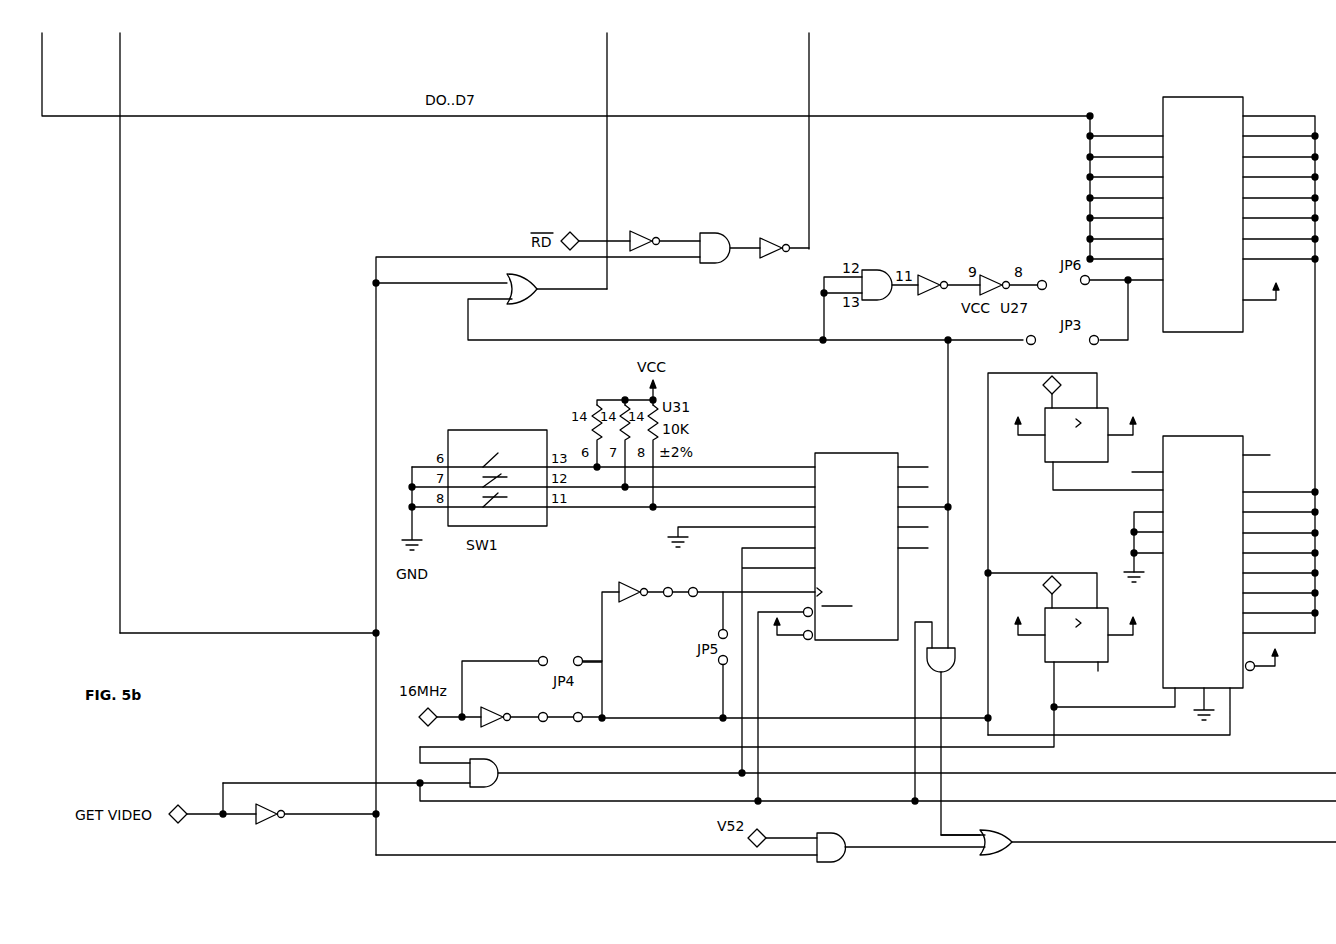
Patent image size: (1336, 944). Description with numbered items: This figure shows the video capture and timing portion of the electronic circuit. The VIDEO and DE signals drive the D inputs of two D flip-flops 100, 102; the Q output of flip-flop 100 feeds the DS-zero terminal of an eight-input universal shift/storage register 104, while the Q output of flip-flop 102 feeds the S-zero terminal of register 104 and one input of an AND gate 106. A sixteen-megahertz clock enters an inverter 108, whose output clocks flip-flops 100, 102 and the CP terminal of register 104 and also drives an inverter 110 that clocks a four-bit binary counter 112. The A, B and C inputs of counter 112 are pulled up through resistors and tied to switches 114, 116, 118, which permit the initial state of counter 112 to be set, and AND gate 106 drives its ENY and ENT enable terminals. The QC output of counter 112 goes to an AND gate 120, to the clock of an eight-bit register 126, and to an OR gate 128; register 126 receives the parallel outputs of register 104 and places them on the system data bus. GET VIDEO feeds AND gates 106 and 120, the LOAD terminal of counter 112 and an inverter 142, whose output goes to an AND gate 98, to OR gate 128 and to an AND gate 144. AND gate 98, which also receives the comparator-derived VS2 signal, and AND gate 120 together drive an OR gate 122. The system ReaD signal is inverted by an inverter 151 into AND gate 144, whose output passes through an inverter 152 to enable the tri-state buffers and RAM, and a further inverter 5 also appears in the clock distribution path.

The inverter U27 5 is at (918, 278).
The AND gate 98 is at (841, 851).
The D flip-flop 100 is at (1108, 408).
The D flip-flop 102 is at (1043, 590).
The eight input universal shift/storage register 104 is at (1244, 437).
The AND gate 106 is at (490, 783).
The inverter 108 is at (490, 712).
The inverter 110 is at (622, 585).
The four-bit binary counter 112 is at (898, 453).
The switch 114 is at (495, 456).
The switch 116 is at (507, 468).
The switch contact of SW1 118 is at (493, 505).
The AND gate 120 is at (928, 669).
The OR gate 122 is at (1013, 851).
The eight bit register 126 is at (1244, 98).
The OR gate 128 is at (536, 300).
The inverter 142 is at (260, 826).
The AND gate 144 is at (708, 266).
The inverter 151 is at (660, 231).
The inverter 152 is at (761, 237).